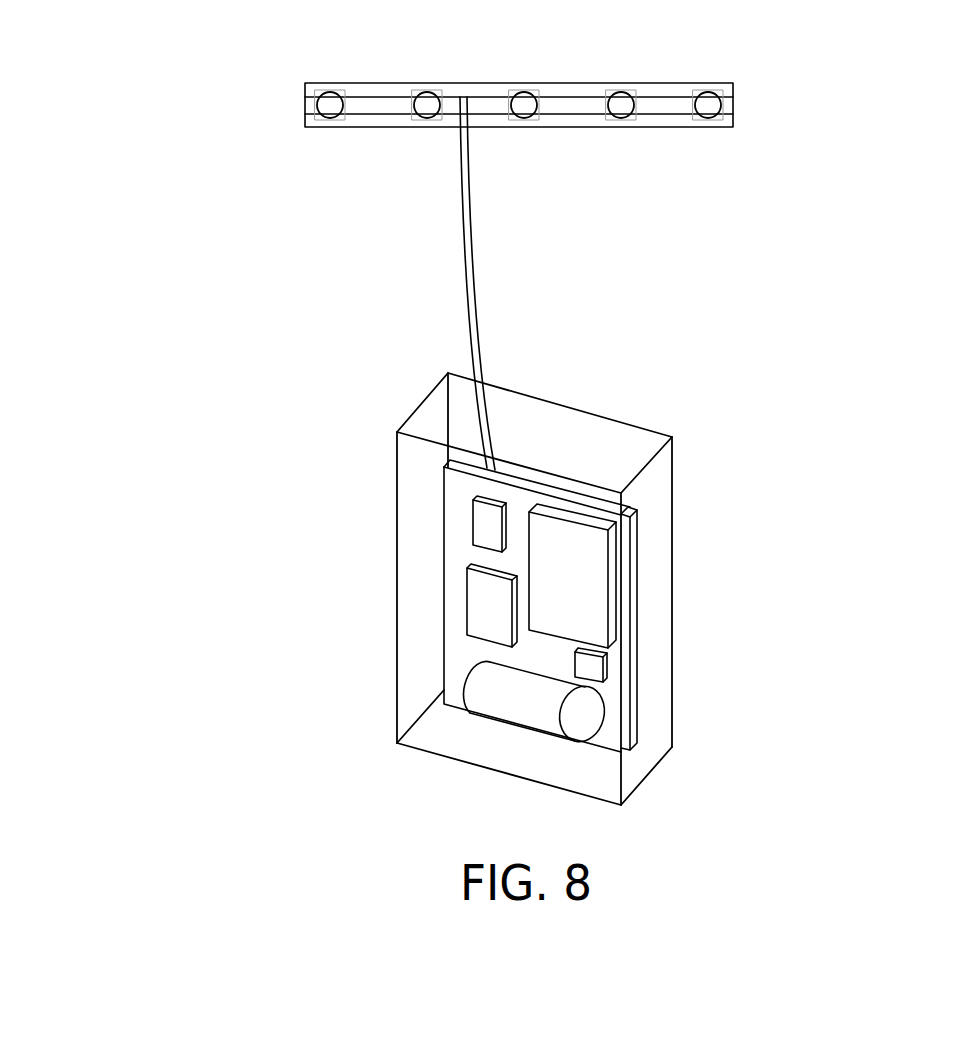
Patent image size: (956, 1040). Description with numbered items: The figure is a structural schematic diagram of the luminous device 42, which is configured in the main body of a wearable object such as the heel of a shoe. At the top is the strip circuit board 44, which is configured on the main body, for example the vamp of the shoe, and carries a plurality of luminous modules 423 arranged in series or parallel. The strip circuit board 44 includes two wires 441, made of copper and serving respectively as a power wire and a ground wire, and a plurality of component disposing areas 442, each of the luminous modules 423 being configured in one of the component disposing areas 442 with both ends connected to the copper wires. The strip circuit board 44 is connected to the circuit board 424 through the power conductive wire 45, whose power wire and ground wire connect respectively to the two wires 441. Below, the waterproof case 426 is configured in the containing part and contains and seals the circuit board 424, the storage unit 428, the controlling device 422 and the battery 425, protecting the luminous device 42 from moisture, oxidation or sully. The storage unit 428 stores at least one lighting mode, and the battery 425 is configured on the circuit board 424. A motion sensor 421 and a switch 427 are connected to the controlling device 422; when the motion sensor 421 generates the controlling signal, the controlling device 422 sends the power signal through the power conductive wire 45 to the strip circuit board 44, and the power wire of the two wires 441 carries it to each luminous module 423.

The luminous device 42 is at (127, 270).
The strip circuit board 44 is at (296, 106).
The wires 441 is at (733, 96).
The component disposing areas 442 is at (305, 116).
The luminous modules 423 is at (330, 92).
The power conductive wire 45 is at (467, 283).
The waterproof case 426 is at (397, 523).
The switch 427 is at (471, 534).
The controlling device 422 is at (465, 606).
The battery 425 is at (612, 607).
The circuit board 424 is at (636, 661).
The storage unit 428 is at (607, 672).
The motion sensor 421 is at (507, 723).